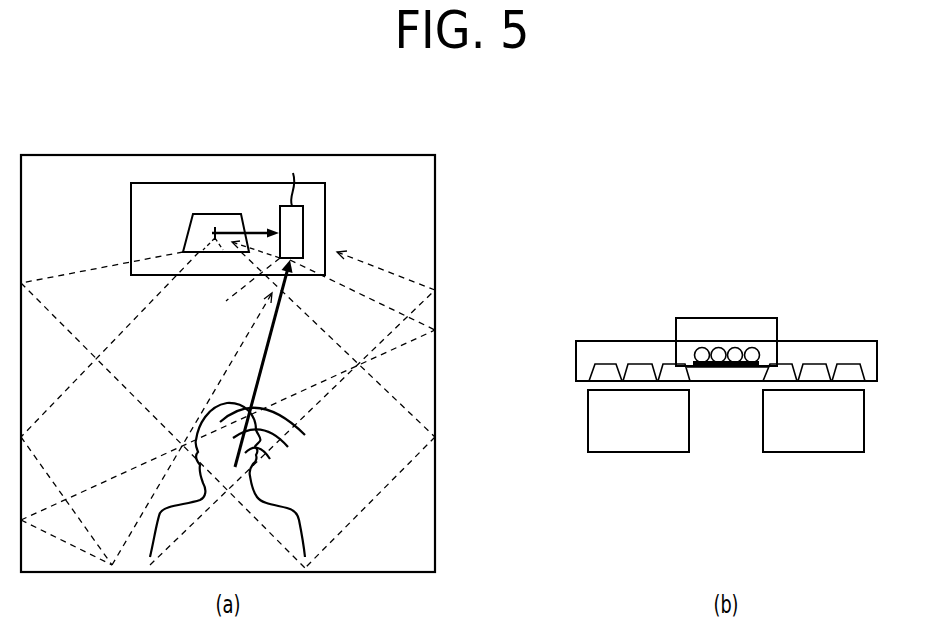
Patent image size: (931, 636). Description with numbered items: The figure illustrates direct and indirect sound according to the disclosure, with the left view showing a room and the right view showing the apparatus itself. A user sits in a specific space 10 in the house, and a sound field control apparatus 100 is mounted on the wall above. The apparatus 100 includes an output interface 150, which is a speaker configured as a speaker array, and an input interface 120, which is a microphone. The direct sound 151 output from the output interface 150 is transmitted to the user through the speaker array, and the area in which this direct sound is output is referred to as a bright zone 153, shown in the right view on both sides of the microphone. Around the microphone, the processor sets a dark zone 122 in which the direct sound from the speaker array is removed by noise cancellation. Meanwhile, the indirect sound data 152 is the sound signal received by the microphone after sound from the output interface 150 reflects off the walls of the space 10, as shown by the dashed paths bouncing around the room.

The space 10 is at (80, 155).
The sound field control apparatus 100 is at (168, 183).
The output interface 150 is at (225, 214).
The direct sound 151 is at (268, 231).
The input interface 120 is at (297, 206).
The dark zone 122 is at (726, 318).
The indirect sound data 152 is at (395, 272).
The bright zone 153 is at (638, 452).